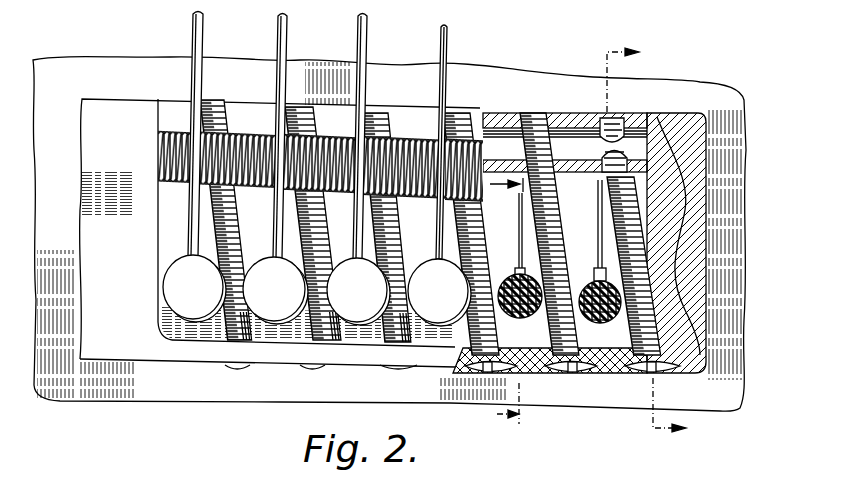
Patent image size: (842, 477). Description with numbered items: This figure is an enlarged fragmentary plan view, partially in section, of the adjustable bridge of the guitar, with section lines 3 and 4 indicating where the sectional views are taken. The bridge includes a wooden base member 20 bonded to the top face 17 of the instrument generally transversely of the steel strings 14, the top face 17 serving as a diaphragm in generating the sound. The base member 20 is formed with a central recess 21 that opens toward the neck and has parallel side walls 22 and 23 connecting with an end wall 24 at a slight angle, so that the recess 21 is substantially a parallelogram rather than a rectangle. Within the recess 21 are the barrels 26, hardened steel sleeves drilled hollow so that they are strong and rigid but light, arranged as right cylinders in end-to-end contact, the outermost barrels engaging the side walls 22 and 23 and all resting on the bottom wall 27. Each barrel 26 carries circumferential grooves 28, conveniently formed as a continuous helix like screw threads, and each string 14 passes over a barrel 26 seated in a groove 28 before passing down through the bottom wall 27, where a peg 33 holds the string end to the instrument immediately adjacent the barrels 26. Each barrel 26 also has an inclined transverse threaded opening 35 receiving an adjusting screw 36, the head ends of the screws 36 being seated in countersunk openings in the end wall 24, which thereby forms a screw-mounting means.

The steel strings 14 is at (193, 26).
The top face 17 is at (78, 396).
The base member 20 is at (678, 257).
The central recess 21 is at (240, 122).
The side wall 22 is at (160, 207).
The side wall 23 is at (640, 207).
The end wall 24 is at (277, 355).
The barrels 26 is at (506, 113).
The bottom wall 27 is at (198, 330).
The circumferential grooves 28 is at (160, 147).
The peg 33 is at (510, 316).
The threaded opening 35 is at (625, 130).
The adjusting screw 36 is at (398, 366).
The section line 3- 3 is at (658, 243).
The section line 4- 4 is at (498, 303).